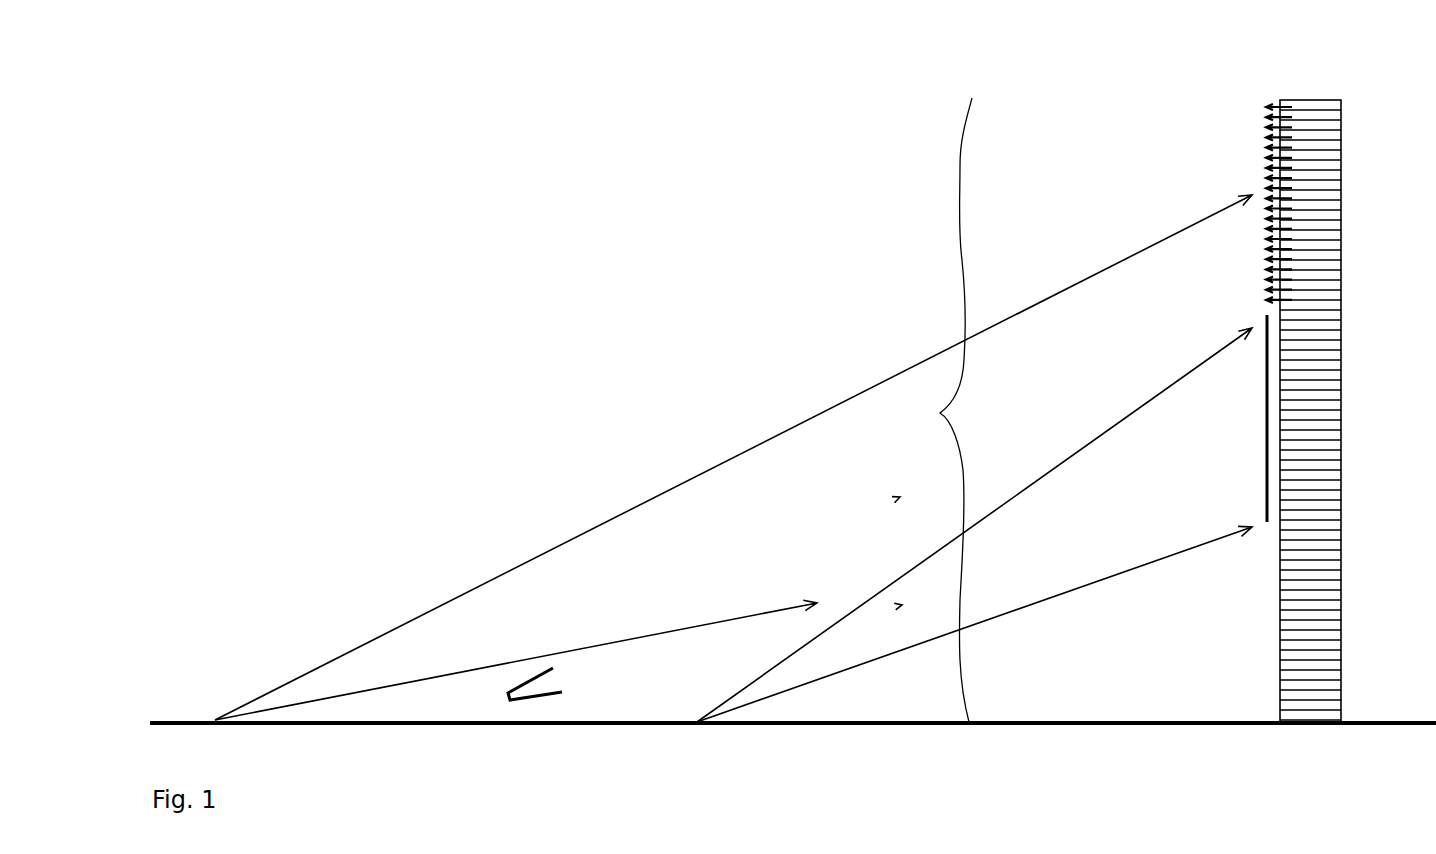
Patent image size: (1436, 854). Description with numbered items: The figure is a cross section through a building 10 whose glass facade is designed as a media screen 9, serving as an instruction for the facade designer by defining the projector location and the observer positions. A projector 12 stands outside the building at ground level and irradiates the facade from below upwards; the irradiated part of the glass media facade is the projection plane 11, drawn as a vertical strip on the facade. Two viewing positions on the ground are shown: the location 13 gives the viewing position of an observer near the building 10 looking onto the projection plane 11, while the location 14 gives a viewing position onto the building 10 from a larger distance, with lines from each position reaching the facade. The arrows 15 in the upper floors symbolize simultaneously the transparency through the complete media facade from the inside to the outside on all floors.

The media screen 9 is at (944, 410).
The building 10 is at (1315, 92).
The projection plane 11 is at (1267, 418).
The projector 12 is at (508, 697).
The viewing position near the building 13 is at (697, 727).
The viewing position from a larger distance 14 is at (213, 727).
The arrows 15 is at (1256, 101).